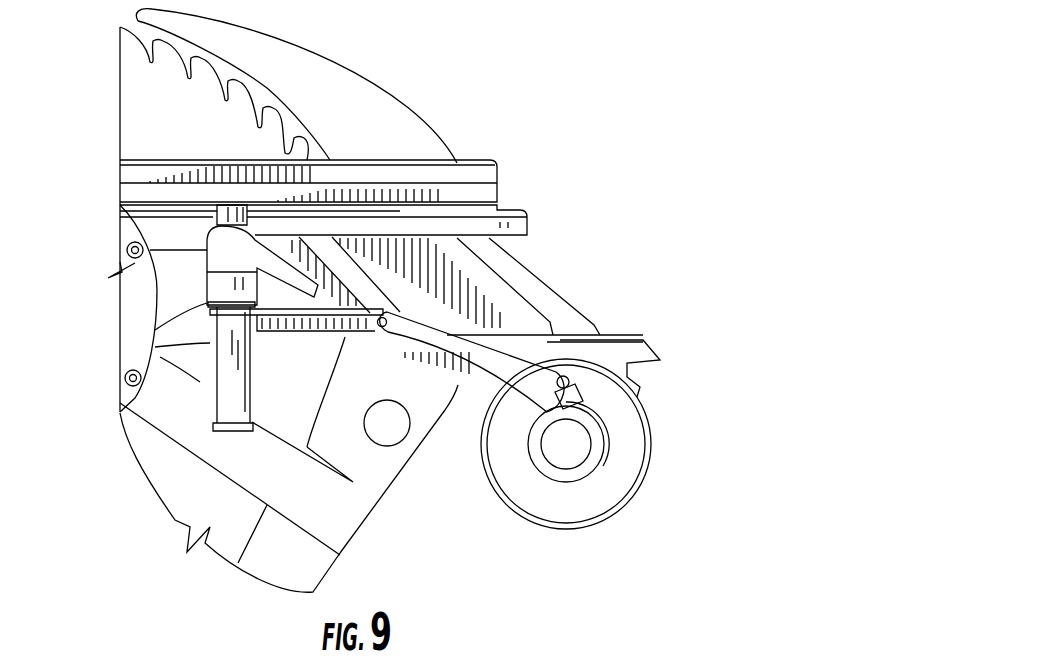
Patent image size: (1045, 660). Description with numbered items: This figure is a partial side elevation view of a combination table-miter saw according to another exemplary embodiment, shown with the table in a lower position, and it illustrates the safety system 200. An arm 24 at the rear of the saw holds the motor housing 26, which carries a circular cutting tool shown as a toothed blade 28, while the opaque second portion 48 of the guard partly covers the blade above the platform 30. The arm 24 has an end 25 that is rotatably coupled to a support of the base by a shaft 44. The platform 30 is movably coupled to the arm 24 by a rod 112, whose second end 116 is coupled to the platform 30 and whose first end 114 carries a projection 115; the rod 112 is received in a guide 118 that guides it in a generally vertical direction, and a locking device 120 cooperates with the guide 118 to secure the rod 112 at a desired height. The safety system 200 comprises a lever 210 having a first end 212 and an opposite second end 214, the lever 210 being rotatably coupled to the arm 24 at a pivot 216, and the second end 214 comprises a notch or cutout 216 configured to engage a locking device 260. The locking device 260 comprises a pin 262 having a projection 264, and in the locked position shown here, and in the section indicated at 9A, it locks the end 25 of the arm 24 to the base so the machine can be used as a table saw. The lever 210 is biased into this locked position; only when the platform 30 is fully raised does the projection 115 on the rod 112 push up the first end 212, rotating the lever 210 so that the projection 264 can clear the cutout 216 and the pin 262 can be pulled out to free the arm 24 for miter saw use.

The toothed blade 28 is at (128, 70).
The second portion 48 is at (320, 70).
The platform 30 is at (497, 172).
The arm 24 is at (523, 263).
The safety system 200 is at (553, 312).
The locking device 260 is at (568, 378).
The pin 262 is at (573, 352).
The pivot 216 is at (627, 390).
The second end 214 is at (580, 405).
The shaft 44 is at (585, 444).
The end 25 is at (627, 490).
The projection 264 is at (556, 375).
The lever 210 is at (458, 362).
The second end 116 is at (120, 212).
The locking device 120 is at (127, 252).
The guide 118 is at (210, 284).
The first end 212 is at (210, 312).
The motor housing 26 is at (118, 342).
The rod 112 is at (218, 390).
The projection 115 is at (213, 427).
The first end 114 is at (230, 432).
The section line 9A is at (541, 342).